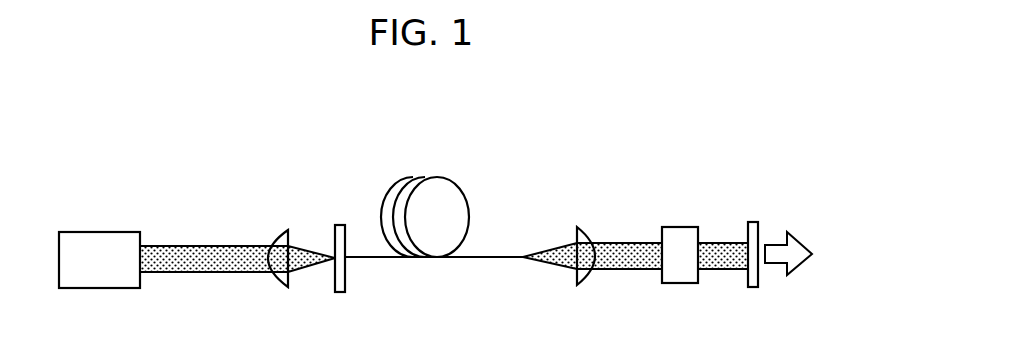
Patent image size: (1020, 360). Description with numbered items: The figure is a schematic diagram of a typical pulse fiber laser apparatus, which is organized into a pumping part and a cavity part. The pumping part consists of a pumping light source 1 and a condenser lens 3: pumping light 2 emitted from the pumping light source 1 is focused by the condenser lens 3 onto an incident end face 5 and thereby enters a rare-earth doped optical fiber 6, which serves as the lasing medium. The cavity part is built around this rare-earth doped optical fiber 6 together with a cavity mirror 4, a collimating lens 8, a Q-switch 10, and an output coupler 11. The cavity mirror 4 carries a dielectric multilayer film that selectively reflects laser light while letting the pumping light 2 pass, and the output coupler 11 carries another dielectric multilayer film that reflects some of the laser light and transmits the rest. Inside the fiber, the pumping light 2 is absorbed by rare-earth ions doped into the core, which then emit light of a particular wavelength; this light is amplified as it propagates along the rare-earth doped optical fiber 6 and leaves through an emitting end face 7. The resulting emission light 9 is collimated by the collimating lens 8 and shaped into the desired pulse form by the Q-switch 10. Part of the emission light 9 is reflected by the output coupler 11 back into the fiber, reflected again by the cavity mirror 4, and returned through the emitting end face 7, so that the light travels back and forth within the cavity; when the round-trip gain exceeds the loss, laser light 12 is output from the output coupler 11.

The pumping light source 1 is at (103, 232).
The pumping light 2 is at (200, 245).
The condenser lens 3 is at (286, 229).
The cavity mirror 4 is at (339, 225).
The incident end face 5 is at (354, 268).
The rare-earth doped optical fiber 6 is at (426, 177).
The emitting end face 7 is at (512, 268).
The collimating lens 8 is at (584, 227).
The emission light 9 is at (631, 242).
The Q-switch 10 is at (680, 227).
The output coupler 11 is at (752, 222).
The laser light 12 is at (814, 250).